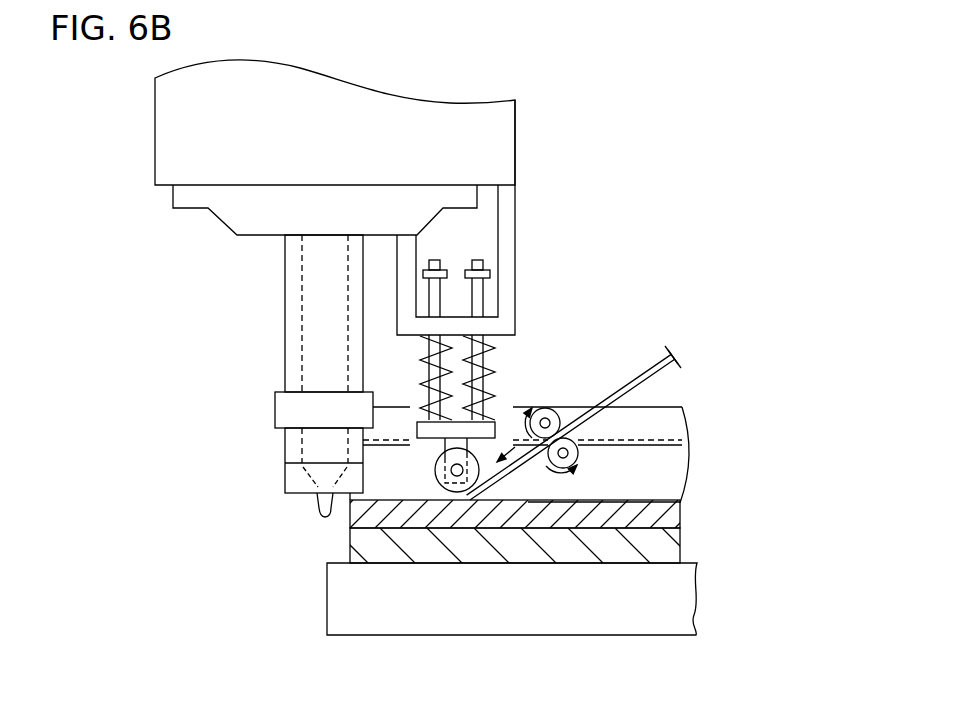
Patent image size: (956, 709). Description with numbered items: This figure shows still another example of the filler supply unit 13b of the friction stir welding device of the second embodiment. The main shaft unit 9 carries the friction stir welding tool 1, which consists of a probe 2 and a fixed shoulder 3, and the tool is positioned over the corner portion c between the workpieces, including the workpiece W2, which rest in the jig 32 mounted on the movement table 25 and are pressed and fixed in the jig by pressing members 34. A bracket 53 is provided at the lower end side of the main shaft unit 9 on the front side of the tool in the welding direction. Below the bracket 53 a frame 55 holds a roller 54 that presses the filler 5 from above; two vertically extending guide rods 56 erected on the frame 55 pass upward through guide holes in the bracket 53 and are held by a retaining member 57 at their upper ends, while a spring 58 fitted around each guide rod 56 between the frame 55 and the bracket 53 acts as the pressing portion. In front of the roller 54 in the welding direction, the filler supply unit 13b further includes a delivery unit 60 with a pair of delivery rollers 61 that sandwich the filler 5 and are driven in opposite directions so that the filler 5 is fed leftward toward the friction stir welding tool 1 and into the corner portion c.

The main shaft unit 9 is at (516, 121).
The friction stir welding tool 1 is at (272, 448).
The fixed shoulder 3 is at (293, 478).
The probe 2 is at (318, 512).
The bracket 53 is at (517, 305).
The retaining member 57 is at (446, 268).
The guide rods 56 is at (428, 292).
The spring 58 is at (428, 362).
The frame 55 is at (497, 432).
The roller 54 is at (433, 477).
The pressing members 34 is at (678, 427).
The workpiece W2 is at (655, 466).
The filler supply unit 13b is at (608, 357).
The filler 5 is at (673, 364).
The delivery rollers 61 is at (558, 414).
The jig 32 is at (655, 544).
The movement table 25 is at (678, 599).
The delivery unit 60 is at (583, 476).
The corner portion c is at (528, 502).